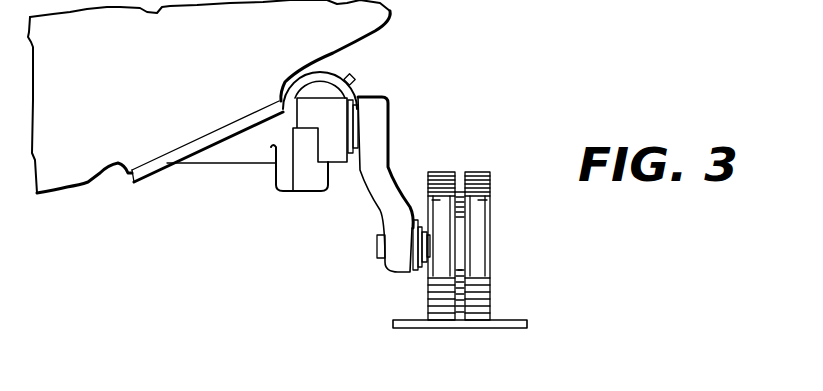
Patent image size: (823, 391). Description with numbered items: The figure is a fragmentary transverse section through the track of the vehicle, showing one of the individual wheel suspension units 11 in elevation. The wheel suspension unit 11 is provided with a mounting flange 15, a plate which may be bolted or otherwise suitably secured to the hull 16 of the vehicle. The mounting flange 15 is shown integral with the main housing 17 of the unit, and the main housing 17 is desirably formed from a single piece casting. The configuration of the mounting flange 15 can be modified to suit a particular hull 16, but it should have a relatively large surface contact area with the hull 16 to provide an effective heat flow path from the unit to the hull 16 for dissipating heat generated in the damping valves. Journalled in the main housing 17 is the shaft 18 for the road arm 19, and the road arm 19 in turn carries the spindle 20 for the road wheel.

The wheel suspension unit 11 is at (346, 155).
The mounting flange 15 is at (167, 164).
The hull 16 is at (83, 168).
The main housing 17 is at (253, 155).
The shaft 18 is at (359, 122).
The road arm 19 is at (378, 172).
The spindle 20 is at (378, 247).